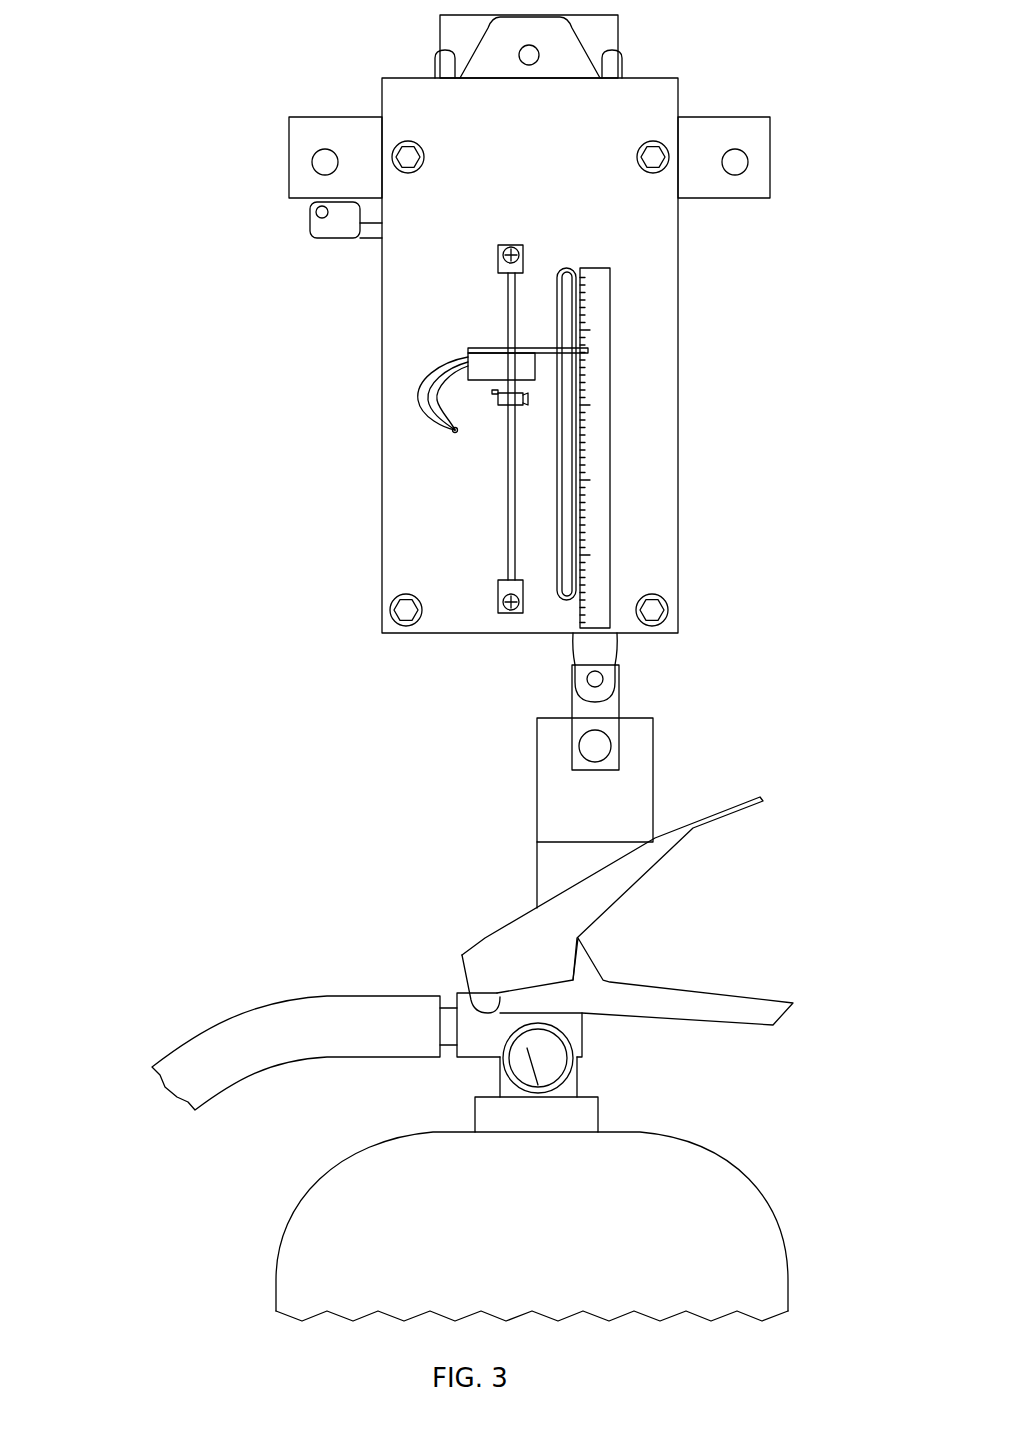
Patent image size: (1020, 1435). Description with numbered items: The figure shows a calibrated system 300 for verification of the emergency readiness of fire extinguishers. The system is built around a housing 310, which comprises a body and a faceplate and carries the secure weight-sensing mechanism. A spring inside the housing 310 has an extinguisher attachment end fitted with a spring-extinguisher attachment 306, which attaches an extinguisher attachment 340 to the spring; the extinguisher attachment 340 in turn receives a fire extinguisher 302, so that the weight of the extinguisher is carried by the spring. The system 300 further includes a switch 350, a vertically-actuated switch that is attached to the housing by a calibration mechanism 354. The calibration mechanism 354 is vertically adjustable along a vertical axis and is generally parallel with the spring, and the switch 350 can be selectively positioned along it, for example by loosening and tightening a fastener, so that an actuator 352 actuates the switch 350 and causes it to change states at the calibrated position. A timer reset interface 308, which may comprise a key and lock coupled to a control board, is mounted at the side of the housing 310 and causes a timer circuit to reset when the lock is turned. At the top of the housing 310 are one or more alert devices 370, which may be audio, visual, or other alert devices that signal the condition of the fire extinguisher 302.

The calibrated system 300 is at (146, 118).
The fire extinguisher 302 is at (490, 947).
The spring-extinguisher attachment 306 is at (577, 686).
The timer reset interface 308 is at (315, 227).
The housing 310 is at (667, 408).
The extinguisher attachment 340 is at (540, 862).
The switch 350 is at (474, 356).
The actuator 352 is at (561, 345).
The calibration mechanism 354 is at (508, 304).
The alert devices 370 is at (440, 71).